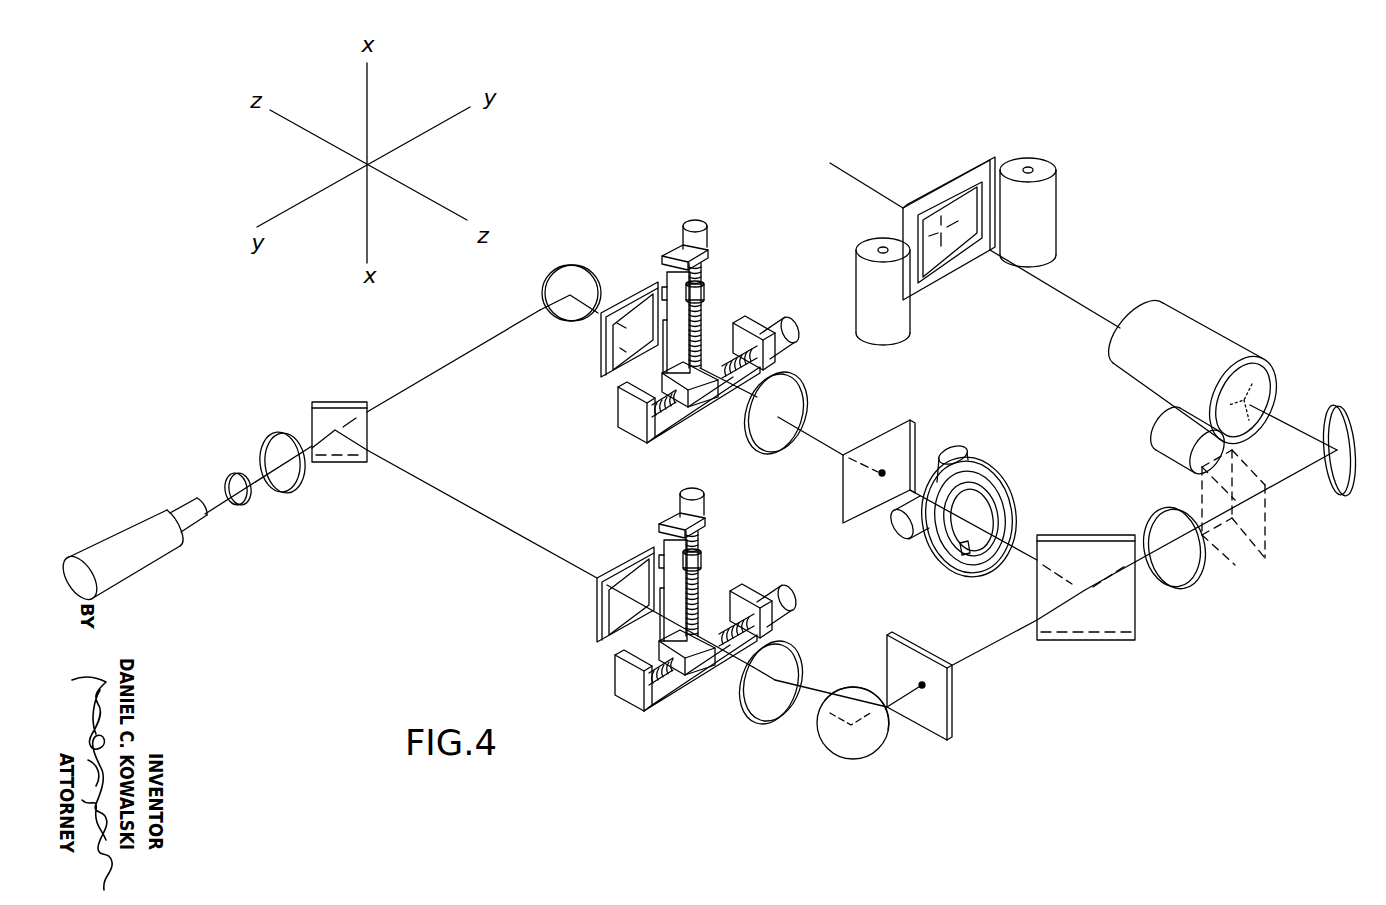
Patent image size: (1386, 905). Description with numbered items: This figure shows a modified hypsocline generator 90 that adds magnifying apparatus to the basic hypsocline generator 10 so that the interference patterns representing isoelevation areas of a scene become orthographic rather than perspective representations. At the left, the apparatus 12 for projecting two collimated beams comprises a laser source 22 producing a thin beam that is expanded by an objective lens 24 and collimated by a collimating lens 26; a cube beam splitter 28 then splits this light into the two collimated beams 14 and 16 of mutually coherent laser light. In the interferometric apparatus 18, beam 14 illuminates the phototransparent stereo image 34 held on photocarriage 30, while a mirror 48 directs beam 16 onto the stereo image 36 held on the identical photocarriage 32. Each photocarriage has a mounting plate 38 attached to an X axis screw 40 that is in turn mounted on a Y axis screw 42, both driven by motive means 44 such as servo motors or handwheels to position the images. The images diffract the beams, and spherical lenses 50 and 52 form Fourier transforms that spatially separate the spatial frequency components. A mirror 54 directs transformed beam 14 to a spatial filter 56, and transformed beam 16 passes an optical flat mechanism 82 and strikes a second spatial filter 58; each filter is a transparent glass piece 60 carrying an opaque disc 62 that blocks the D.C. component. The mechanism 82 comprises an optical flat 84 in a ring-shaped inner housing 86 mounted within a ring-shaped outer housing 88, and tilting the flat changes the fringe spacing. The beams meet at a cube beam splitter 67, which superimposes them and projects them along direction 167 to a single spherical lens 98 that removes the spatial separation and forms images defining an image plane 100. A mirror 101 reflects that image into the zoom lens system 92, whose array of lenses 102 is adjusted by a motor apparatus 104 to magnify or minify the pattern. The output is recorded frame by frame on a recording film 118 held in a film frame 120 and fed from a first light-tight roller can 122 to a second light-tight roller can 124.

The hypsocline generator 10 is at (1154, 116).
The apparatus for projecting two collimated beams 12 is at (298, 490).
The collimated beam 14 is at (460, 498).
The collimated beam 16 is at (468, 350).
The interferometric apparatus 18 is at (992, 503).
The laser source 22 is at (156, 562).
The objective lens 24 is at (244, 505).
The collimating lens 26 is at (270, 438).
The cube beam splitter 28 is at (344, 408).
The photocarriage 30 is at (624, 707).
The photocarriage 32 is at (620, 437).
The phototransparent stereo image 34 is at (606, 598).
The phototransparent stereo image 36 is at (606, 352).
The mounting plate 38 is at (608, 456).
The X axis screw 40 is at (704, 272).
The Y axis screw 42 is at (722, 338).
The motive means 44 is at (706, 230).
The mirror 48 is at (576, 274).
The spherical lens 50 is at (796, 660).
The spherical lens 52 is at (802, 402).
The mirror 54 is at (858, 752).
The spatial filter 56 is at (934, 730).
The spatial filter 58 is at (899, 445).
The transparent glass piece 60 is at (914, 432).
The opaque disc 62 is at (880, 474).
The cube beam splitter 67 is at (1090, 630).
The optical flat mechanism 82 is at (992, 530).
The optical flat 84 is at (978, 526).
The ring-shaped inner housing 86 is at (1006, 505).
The ring-shaped outer housing 88 is at (971, 572).
The hypsocline generator 90 is at (766, 174).
The zoom lens system 92 is at (1223, 382).
The spherical lens 98 is at (1162, 518).
The image plane 100 is at (1268, 526).
The mirror 101 is at (1338, 410).
The array of lenses 102 is at (1182, 320).
The motor apparatus 104 is at (1162, 448).
The recording film 118 is at (957, 229).
The film frame or holder 120 is at (959, 174).
The first light-tight roller can 122 is at (1050, 159).
The second light-tight roller can 124 is at (862, 296).
The direction 167 is at (1136, 568).